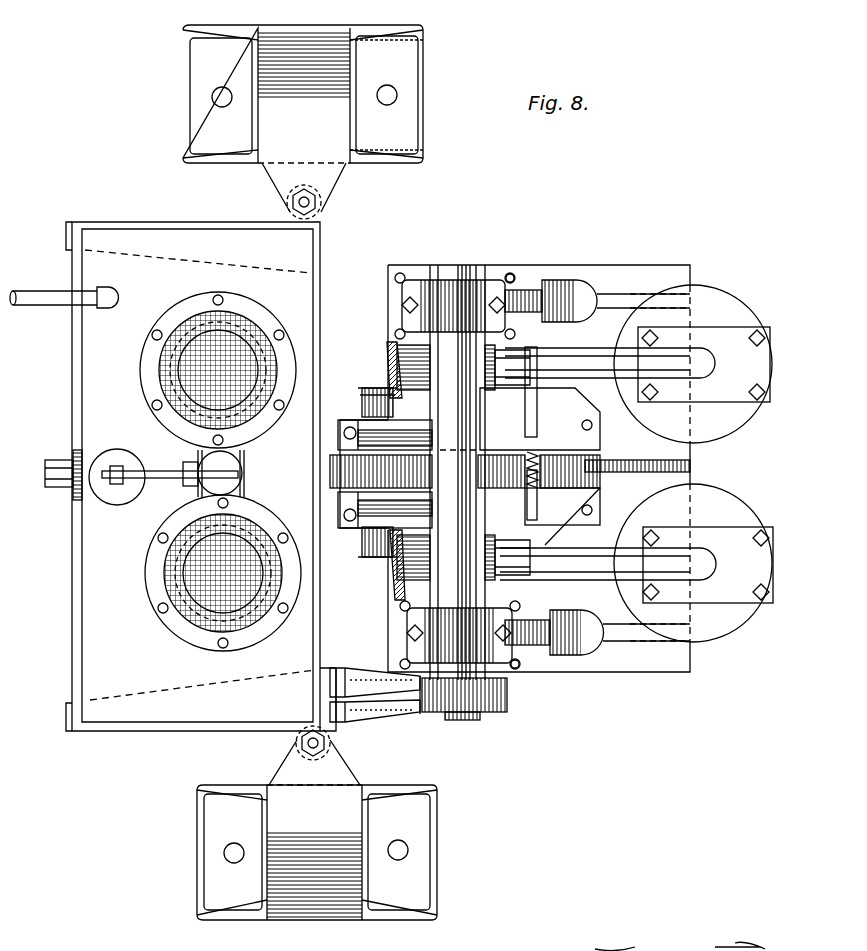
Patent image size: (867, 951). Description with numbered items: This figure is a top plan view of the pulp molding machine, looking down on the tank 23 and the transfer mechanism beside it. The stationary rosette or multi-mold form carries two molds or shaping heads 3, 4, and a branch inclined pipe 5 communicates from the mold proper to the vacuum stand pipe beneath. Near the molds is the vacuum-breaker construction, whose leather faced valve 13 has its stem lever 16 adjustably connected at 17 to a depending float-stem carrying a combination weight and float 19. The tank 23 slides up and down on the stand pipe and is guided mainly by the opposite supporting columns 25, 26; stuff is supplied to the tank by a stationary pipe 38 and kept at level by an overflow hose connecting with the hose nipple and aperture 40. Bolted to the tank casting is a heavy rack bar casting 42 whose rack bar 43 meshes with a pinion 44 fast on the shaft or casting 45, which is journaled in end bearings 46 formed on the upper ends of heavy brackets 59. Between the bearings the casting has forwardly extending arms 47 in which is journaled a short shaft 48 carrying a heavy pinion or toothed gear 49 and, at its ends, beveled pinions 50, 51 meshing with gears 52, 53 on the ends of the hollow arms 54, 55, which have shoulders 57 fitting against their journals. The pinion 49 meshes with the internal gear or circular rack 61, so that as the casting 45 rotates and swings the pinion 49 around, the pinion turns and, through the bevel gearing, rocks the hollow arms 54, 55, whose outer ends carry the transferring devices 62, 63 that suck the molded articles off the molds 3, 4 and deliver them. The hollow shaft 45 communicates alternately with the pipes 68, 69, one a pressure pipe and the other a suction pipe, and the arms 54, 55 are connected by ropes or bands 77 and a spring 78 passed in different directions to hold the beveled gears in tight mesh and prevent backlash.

The mold or shaping head 3 is at (182, 371).
The mold or shaping head 4 is at (180, 574).
The branch inclined pipe 5 is at (218, 290).
The leather faced valve 13 is at (238, 481).
The stem lever 16 is at (172, 478).
The adjustable connection 17 is at (116, 466).
The combination weight and float 19 is at (125, 503).
The tank 23 is at (85, 622).
The supporting column 25 is at (270, 805).
The supporting column 26 is at (303, 122).
The stationary pipe 38 is at (64, 317).
The hose nipple and aperture 40 is at (52, 460).
The rack bar casting 42 is at (385, 727).
The rack bar 43 is at (420, 714).
The pinion 44 is at (508, 700).
The shaft or casting 45 is at (470, 500).
The end bearing 46 is at (410, 296).
The forwardly extending arm 47 is at (356, 420).
The short shaft 48 is at (358, 440).
The pinion or toothed gear 49 is at (355, 472).
The beveled pinion 50 is at (378, 388).
The beveled pinion 51 is at (382, 542).
The gear 52 is at (392, 362).
The gear 53 is at (398, 592).
The hollow arm 54 is at (590, 349).
The hollow arm 55 is at (606, 580).
The shoulder 57 is at (508, 462).
The bracket 59 is at (514, 277).
The internal gear or circular rack 61 is at (600, 464).
The transferring device 62 is at (762, 300).
The transferring device 63 is at (738, 517).
The pipe 68 is at (598, 652).
The pipe 69 is at (583, 286).
The ropes or bands 77 is at (560, 405).
The spring 78 is at (565, 444).